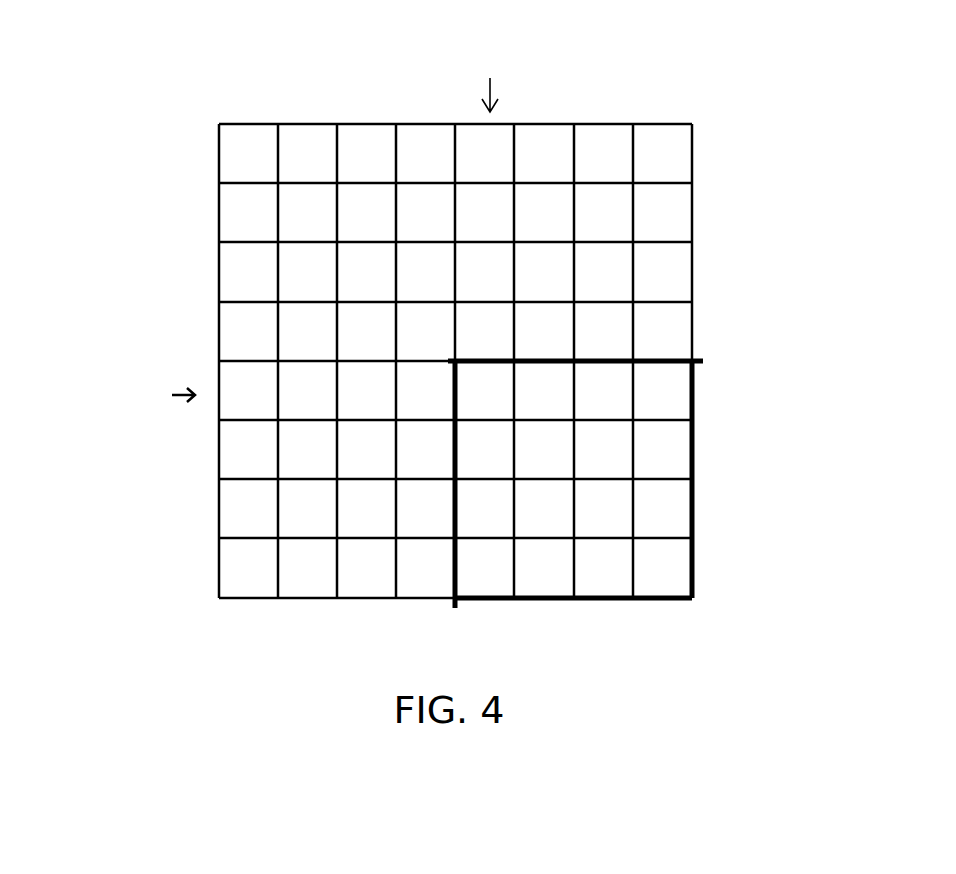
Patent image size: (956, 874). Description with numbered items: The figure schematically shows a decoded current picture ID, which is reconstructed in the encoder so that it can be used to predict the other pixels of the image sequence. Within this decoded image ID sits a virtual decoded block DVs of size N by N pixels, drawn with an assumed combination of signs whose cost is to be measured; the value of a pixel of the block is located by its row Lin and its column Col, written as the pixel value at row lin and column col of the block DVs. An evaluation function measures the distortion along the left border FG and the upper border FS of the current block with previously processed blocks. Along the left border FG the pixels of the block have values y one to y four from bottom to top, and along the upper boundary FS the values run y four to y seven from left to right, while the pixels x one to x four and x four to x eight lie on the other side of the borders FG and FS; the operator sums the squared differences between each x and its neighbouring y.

The decoded current picture ID is at (219, 192).
The upper border FS is at (698, 360).
The virtual decoded block DVs is at (692, 478).
The left border FG is at (455, 601).
The column Col is at (480, 63).
The row Lin is at (127, 397).